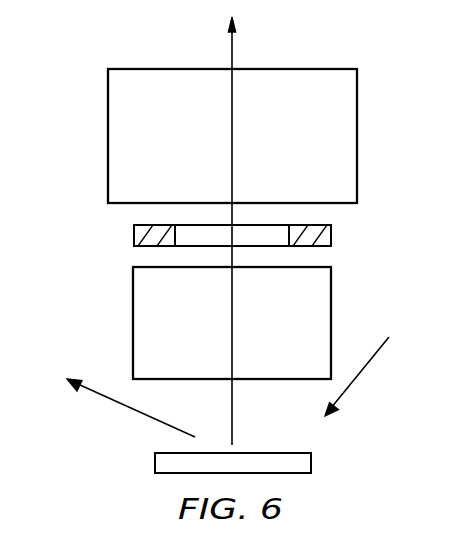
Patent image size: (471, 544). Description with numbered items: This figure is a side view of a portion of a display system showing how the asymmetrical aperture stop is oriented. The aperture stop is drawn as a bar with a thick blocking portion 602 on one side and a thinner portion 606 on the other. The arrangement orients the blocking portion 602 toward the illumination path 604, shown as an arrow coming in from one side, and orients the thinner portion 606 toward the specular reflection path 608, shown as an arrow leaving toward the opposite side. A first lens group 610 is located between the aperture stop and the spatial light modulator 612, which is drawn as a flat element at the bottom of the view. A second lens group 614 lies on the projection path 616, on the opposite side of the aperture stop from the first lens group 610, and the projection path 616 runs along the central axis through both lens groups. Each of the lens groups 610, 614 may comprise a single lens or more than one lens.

The blocking portion 602 is at (331, 233).
The illumination path 604 is at (355, 382).
The thinner portion 606 is at (134, 235).
The specular reflection path 608 is at (131, 410).
The first lens group 610 is at (133, 322).
The spatial light modulator 612 is at (311, 460).
The second lens group 614 is at (108, 137).
The projection path 616 is at (232, 48).